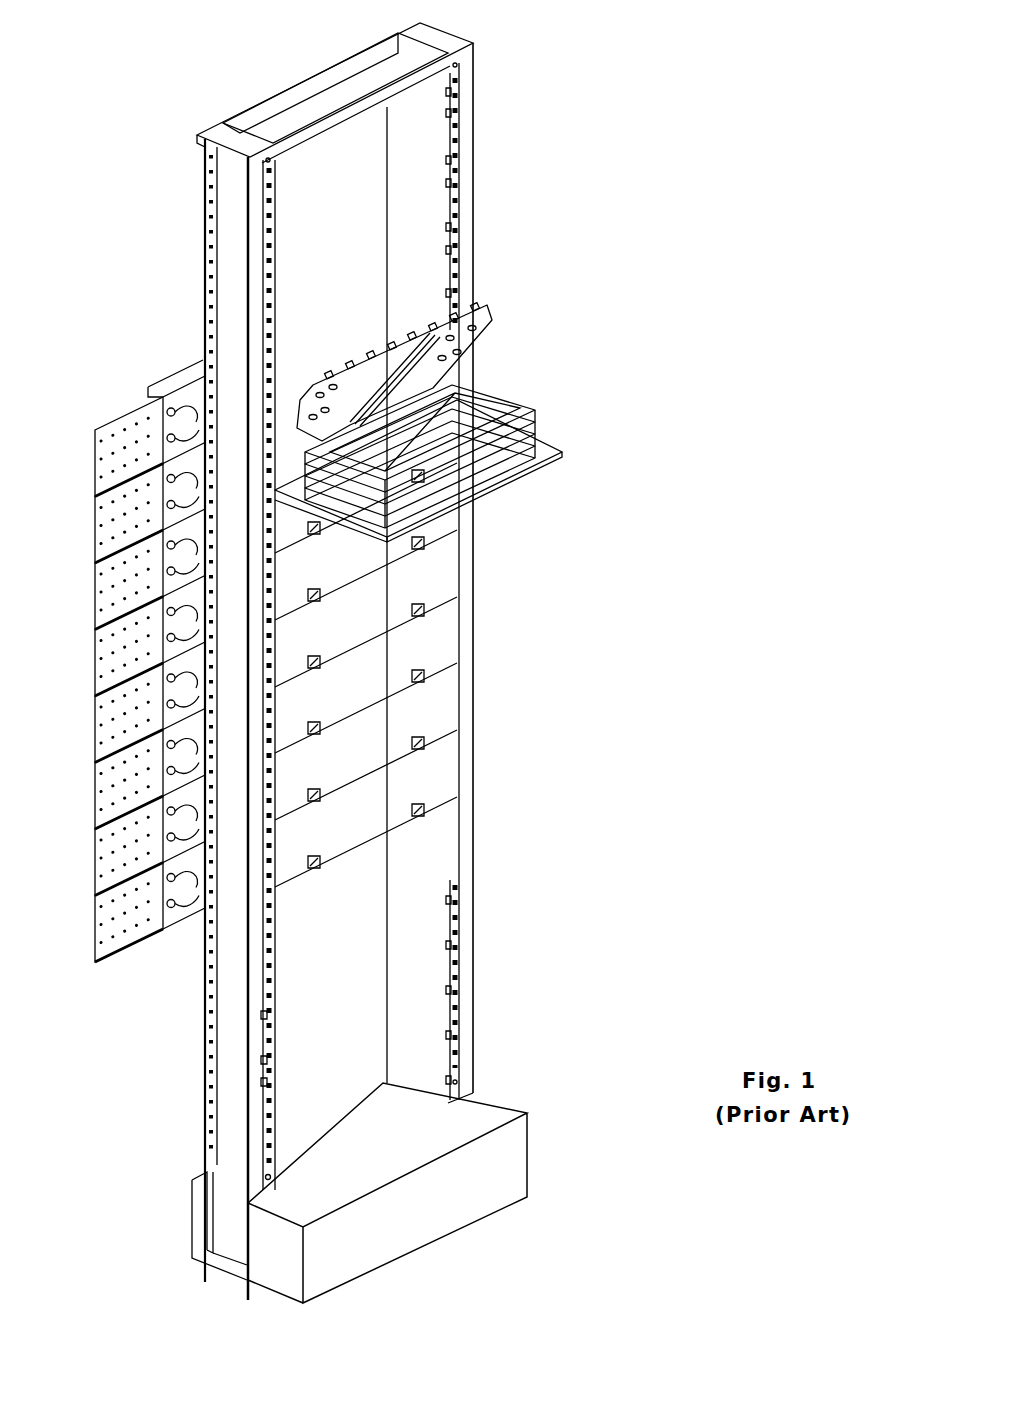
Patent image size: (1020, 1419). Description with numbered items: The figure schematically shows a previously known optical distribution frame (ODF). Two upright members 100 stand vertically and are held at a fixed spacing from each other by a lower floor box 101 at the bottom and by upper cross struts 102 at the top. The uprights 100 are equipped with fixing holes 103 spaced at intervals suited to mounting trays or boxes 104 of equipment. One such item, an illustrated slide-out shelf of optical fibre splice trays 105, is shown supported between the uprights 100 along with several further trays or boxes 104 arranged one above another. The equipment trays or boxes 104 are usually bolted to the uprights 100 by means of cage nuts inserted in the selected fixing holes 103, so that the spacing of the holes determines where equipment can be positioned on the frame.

The upright members 100 is at (237, 191).
The lower floor box 101 is at (517, 1165).
The upper cross struts 102 is at (330, 78).
The fixing holes 103 is at (457, 162).
The trays or boxes 104 is at (533, 472).
The optical fibre splice trays 105 is at (470, 317).